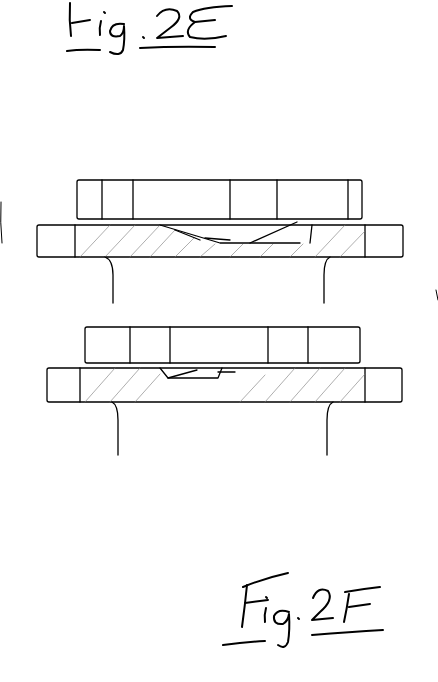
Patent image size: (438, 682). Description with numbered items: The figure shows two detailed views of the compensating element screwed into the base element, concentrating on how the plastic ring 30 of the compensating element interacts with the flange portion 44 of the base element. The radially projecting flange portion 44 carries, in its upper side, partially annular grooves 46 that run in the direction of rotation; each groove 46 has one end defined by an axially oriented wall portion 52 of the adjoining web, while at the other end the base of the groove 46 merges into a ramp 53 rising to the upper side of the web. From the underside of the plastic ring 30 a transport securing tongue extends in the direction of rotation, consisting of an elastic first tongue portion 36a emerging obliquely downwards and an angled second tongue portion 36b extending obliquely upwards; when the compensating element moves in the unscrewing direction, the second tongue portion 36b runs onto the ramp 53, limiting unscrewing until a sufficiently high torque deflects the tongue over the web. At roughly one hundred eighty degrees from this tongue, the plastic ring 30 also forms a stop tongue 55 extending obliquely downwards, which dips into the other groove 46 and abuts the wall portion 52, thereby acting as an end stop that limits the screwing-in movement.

In FIG. 2E, the plastic ring 30 is at (362, 198).
In FIG. 2F, the plastic ring 30 is at (360, 343).
In FIG. 2E, the flange portion 44 is at (60, 225).
In FIG. 2F, the flange portion 44 is at (380, 402).
In FIG. 2E, the groove 46 is at (312, 240).
In FIG. 2F, the groove 46 is at (213, 368).
In FIG. 2E, the first tongue portion 36a is at (252, 232).
In FIG. 2E, the second tongue portion 36b is at (219, 223).
In FIG. 2E, the ramp 53 is at (192, 226).
In FIG. 2F, the wall portion 52 is at (220, 378).
In FIG. 2F, the stop tongue 55 is at (193, 370).